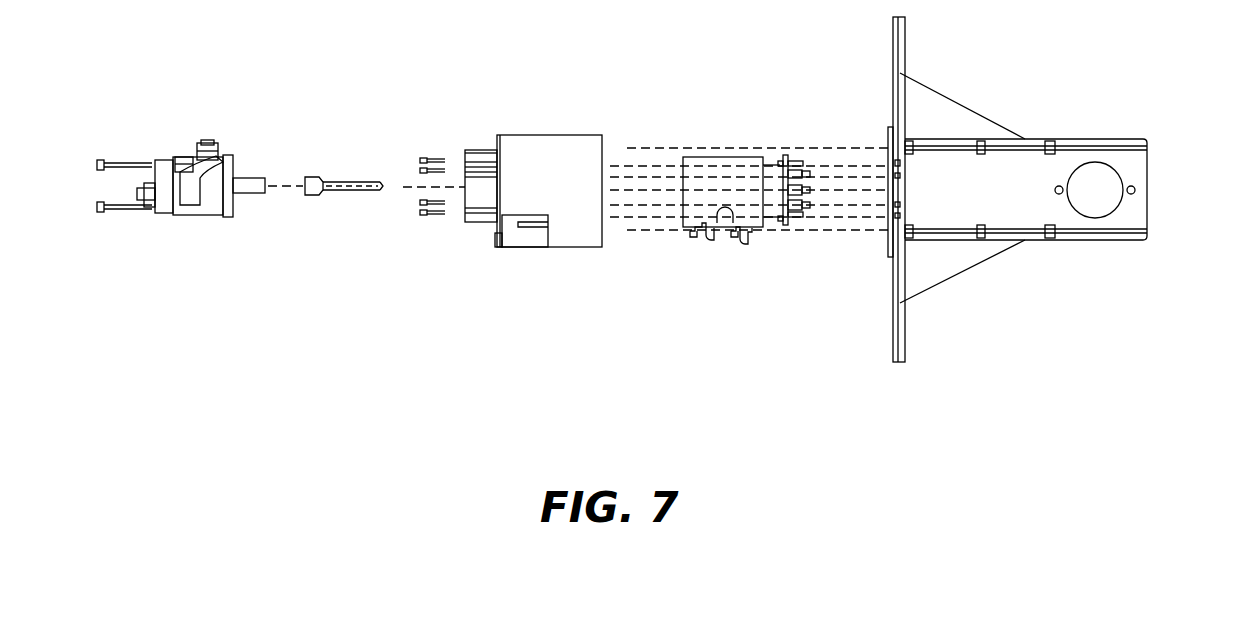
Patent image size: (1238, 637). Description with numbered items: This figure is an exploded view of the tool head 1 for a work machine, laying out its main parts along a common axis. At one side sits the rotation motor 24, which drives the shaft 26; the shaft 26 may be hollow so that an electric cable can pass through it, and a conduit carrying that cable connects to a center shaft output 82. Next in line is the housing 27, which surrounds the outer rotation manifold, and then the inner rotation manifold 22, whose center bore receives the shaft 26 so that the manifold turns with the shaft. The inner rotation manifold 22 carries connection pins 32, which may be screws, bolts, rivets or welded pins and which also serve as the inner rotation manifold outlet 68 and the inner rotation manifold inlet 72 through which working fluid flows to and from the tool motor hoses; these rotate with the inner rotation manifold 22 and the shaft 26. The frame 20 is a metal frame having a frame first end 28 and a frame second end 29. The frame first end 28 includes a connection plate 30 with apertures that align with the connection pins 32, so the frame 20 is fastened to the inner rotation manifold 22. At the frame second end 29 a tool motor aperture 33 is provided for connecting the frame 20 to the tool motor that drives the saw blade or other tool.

The tool head 1 is at (424, 54).
The frame 20 is at (937, 113).
The inner rotation manifold 22 is at (705, 163).
The rotation motor 24 is at (197, 203).
The shaft 26 is at (350, 190).
The housing 27 is at (537, 143).
The frame first end 28 is at (872, 88).
The frame second end 29 is at (1152, 118).
The connection plate 30 is at (890, 250).
The connection pins 32 is at (814, 220).
The tool motor aperture 33 is at (1095, 208).
The inner rotation manifold outlet 68 is at (812, 205).
The inner rotation manifold inlet 72 is at (811, 190).
The center shaft output 82 is at (810, 175).